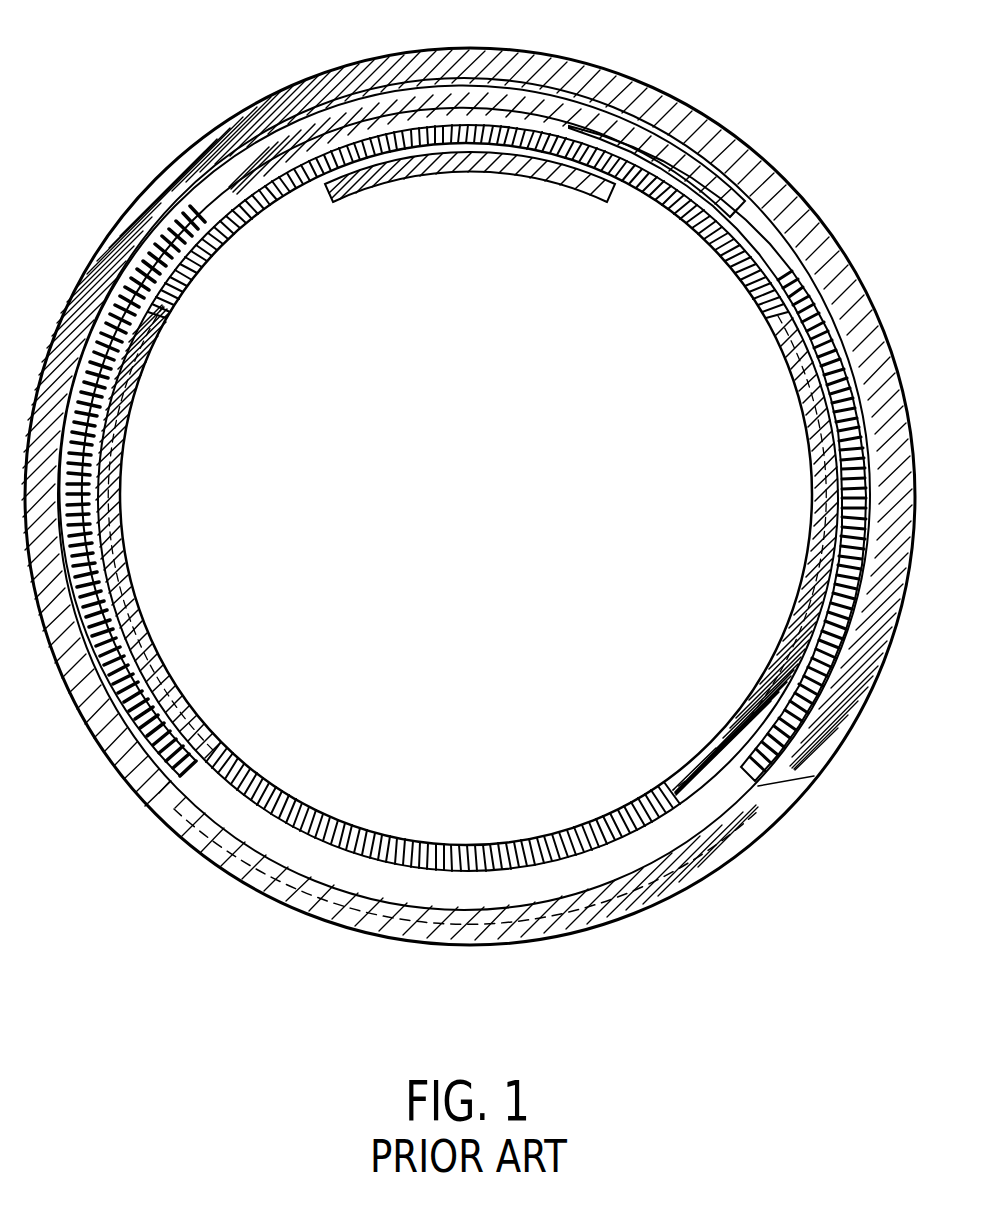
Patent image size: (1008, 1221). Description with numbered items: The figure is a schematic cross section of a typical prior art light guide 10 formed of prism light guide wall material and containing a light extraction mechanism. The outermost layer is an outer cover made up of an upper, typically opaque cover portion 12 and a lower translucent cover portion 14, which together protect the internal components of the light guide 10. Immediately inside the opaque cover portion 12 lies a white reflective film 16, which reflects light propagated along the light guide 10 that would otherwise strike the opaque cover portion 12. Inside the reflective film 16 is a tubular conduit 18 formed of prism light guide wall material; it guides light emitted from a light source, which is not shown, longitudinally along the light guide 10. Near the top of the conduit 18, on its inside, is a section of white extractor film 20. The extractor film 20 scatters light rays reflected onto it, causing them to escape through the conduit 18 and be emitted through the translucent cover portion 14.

The light guide 10 is at (798, 105).
The opaque cover portion 12 is at (245, 108).
The translucent cover portion 14 is at (412, 944).
The white reflective film 16 is at (747, 200).
The tubular conduit 18 is at (822, 543).
The white extractor film 20 is at (465, 172).